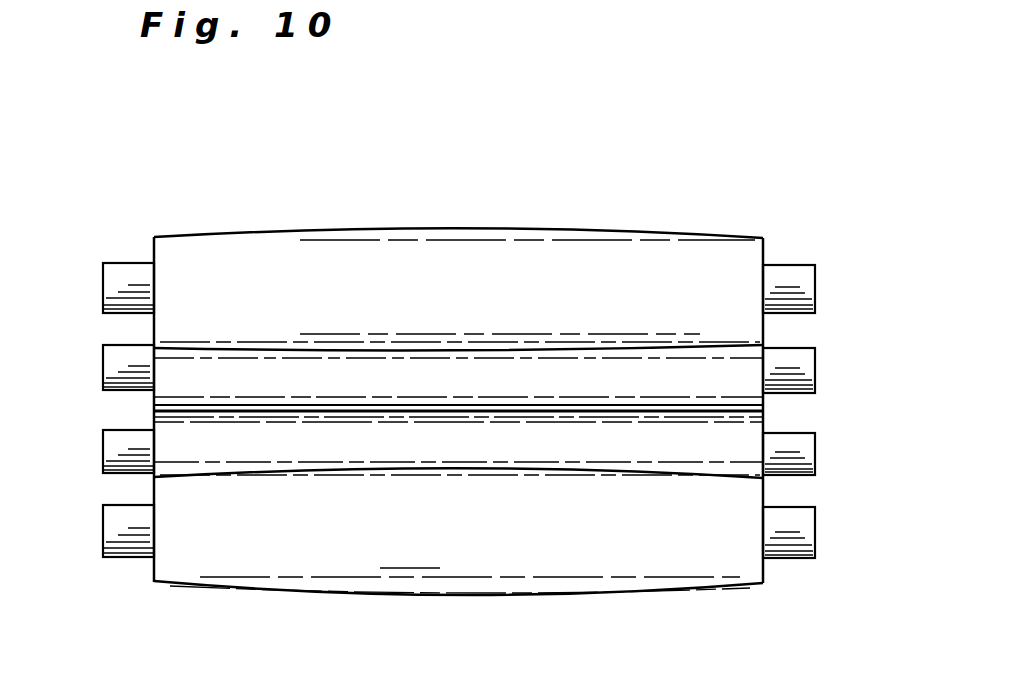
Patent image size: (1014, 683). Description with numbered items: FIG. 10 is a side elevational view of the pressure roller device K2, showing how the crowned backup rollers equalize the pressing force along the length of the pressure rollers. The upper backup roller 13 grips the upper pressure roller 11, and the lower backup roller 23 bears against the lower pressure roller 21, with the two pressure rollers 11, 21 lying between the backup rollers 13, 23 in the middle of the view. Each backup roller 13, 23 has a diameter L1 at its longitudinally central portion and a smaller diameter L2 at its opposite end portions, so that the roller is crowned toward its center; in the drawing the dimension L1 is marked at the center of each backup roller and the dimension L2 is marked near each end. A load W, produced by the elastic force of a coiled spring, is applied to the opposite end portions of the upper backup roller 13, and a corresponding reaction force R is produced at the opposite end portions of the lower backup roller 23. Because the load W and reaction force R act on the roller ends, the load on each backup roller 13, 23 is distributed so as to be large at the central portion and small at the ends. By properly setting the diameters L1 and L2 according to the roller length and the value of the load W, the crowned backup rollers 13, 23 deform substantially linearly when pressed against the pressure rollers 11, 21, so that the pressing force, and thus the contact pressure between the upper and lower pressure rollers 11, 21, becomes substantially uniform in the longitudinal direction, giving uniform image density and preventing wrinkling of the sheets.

The roller assembly K2 is at (266, 195).
The upper backup roller 13 is at (635, 231).
The lower backup roller 23 is at (650, 590).
The lower pressure roller 21 is at (153, 420).
The upper pressure roller 11 is at (763, 398).
The load W is at (128, 252).
The reaction force R is at (126, 568).
The diameter at longitudinally central portion L1 is at (463, 238).
The diameter at opposite end portions L2 is at (184, 247).